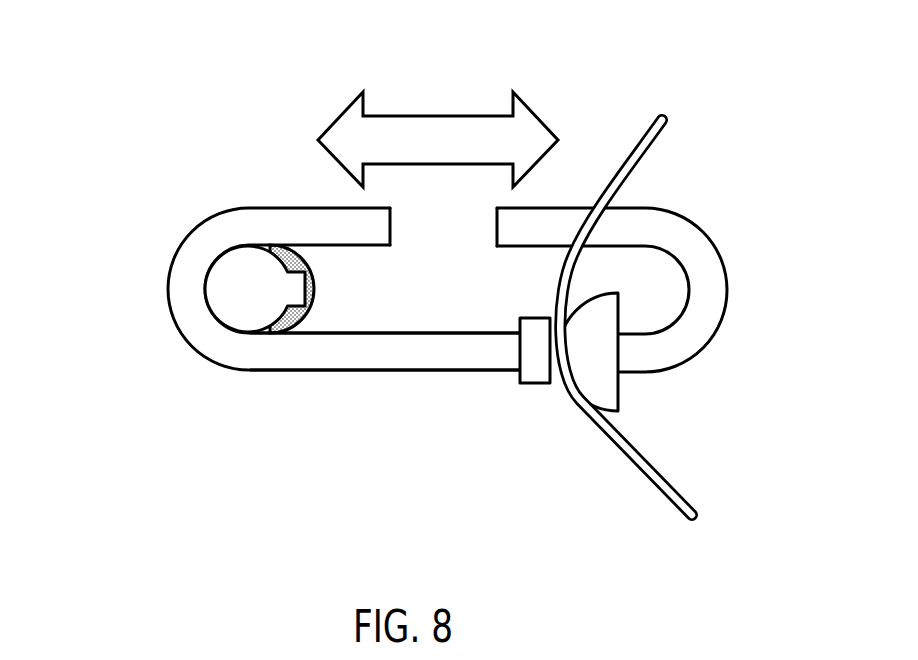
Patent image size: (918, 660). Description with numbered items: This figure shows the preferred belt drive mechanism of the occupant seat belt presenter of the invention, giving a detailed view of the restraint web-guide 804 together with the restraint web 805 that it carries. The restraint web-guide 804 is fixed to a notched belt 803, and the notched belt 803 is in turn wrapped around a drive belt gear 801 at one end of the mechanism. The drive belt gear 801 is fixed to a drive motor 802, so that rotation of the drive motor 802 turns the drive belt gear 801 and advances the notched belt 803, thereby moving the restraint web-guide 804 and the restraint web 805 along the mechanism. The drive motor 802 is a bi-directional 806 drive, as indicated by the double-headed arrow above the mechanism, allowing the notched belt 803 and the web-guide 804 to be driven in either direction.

The drive belt gear 801 is at (222, 305).
The drive motor 802 is at (306, 345).
The notched belt 803 is at (458, 377).
The restraint web-guide 804 is at (648, 398).
The restraint web 805 is at (612, 256).
The bi-directional drive 806 is at (463, 105).